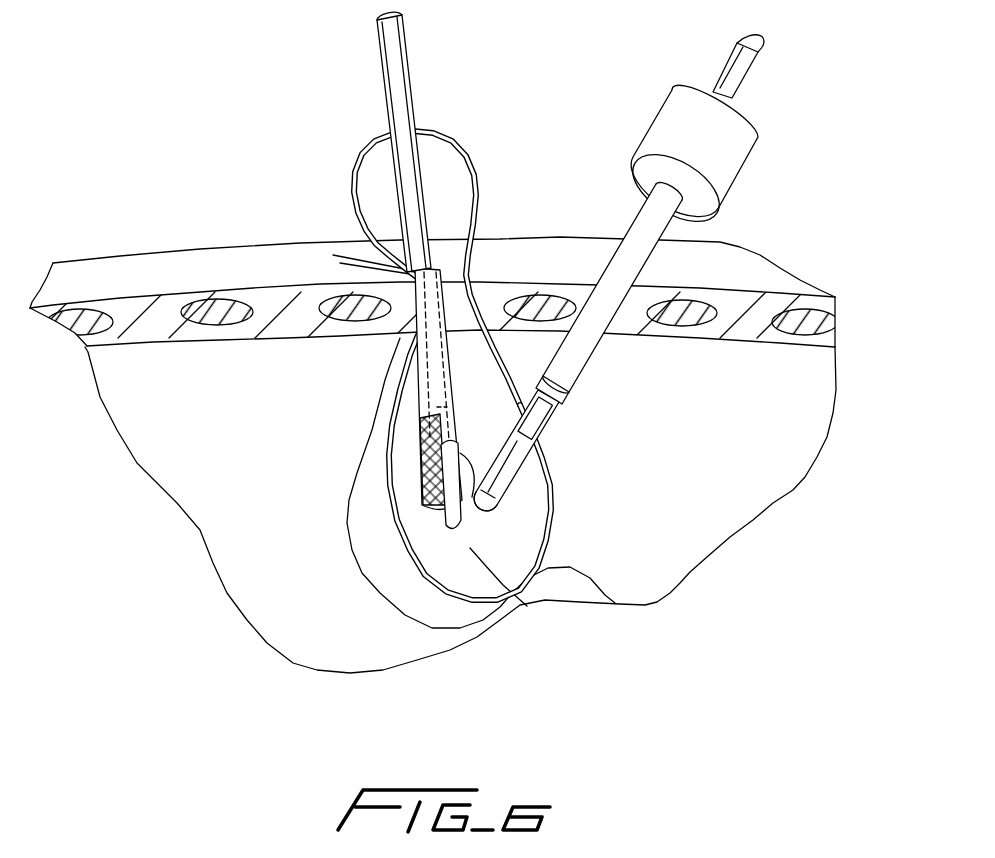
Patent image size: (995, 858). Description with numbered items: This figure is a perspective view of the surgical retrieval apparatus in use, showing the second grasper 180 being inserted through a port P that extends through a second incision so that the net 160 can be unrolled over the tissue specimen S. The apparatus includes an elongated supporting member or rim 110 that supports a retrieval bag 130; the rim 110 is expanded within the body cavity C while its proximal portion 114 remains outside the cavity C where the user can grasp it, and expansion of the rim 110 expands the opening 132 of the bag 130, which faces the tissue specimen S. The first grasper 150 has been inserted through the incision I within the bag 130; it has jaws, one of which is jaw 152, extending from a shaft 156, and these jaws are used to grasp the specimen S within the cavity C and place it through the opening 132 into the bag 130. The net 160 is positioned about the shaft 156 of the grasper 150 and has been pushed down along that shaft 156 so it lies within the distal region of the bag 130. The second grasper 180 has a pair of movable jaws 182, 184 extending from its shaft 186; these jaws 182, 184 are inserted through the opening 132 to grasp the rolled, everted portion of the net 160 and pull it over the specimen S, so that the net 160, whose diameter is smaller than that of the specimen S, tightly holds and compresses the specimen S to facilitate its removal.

The rim 110 is at (367, 448).
The proximal portion 114 is at (409, 248).
The retrieval bag 130 is at (427, 483).
The opening 132 is at (503, 467).
The grasper 150 is at (452, 142).
The jaw 152 is at (451, 573).
The shaft 156 is at (455, 144).
The net 160 is at (359, 459).
The second grasper 180 is at (565, 450).
The jaw 182 is at (580, 433).
The jaw 184 is at (563, 493).
The shaft 186 is at (601, 385).
The port P is at (653, 213).
The incision I is at (459, 272).
The body cavity C is at (289, 398).
The tissue specimen S is at (519, 597).